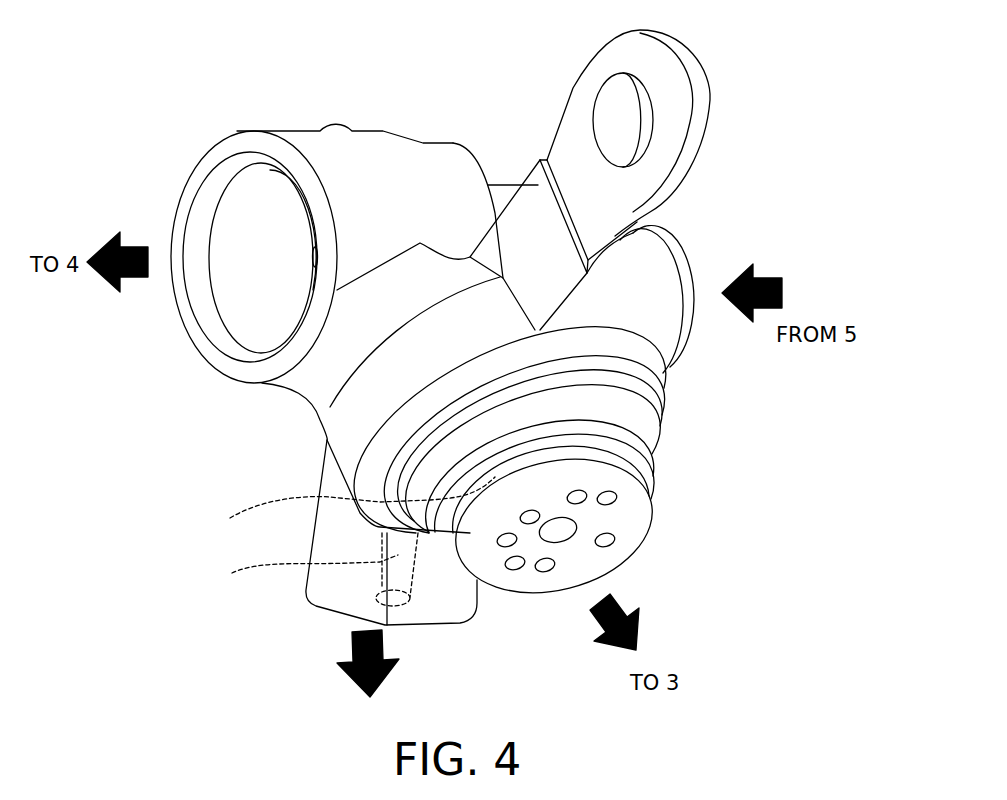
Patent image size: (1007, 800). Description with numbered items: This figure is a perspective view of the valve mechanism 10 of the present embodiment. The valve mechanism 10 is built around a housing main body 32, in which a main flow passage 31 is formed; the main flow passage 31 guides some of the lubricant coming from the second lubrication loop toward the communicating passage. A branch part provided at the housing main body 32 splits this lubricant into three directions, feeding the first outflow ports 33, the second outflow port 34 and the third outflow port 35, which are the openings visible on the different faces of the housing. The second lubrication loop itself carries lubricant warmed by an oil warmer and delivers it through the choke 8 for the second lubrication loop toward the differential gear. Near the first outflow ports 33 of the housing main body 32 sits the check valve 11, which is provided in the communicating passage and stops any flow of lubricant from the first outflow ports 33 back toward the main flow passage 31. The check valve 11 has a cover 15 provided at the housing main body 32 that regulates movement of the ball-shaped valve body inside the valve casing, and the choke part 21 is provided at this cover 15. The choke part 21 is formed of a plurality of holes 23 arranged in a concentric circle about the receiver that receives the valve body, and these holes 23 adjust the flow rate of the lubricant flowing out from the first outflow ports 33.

The choke for the second lubrication loop 8 is at (315, 256).
The valve mechanism 10 is at (150, 206).
The check valve 11 is at (351, 532).
The cover 15 is at (590, 405).
The choke part 21 is at (590, 686).
The holes 23 is at (505, 570).
The main flow passage 31 is at (690, 274).
The housing main body 32 is at (368, 130).
The first outflow ports 33 is at (572, 524).
The second outflow port 34 is at (246, 284).
The third outflow port 35 is at (313, 569).